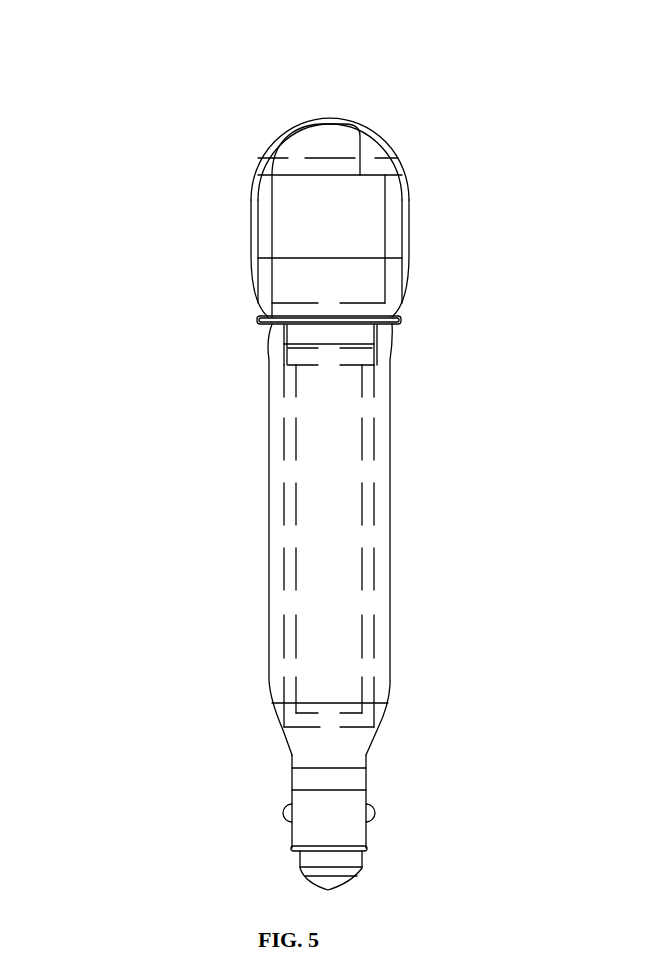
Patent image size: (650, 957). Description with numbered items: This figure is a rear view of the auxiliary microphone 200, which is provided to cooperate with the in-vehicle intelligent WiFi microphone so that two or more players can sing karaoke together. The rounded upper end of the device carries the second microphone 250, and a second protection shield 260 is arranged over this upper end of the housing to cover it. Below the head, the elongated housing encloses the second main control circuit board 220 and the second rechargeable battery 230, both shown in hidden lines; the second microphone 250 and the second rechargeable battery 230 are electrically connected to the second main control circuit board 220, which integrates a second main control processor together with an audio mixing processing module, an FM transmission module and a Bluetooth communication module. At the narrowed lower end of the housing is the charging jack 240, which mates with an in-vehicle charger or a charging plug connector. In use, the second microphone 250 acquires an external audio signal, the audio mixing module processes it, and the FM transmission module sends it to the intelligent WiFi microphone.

The auxiliary microphone 200 is at (412, 141).
The second main control circuit board 220 is at (355, 578).
The second rechargeable battery 230 is at (300, 488).
The charging jack 240 is at (343, 820).
The second microphone 250 is at (305, 212).
The second protection shield 260 is at (297, 125).